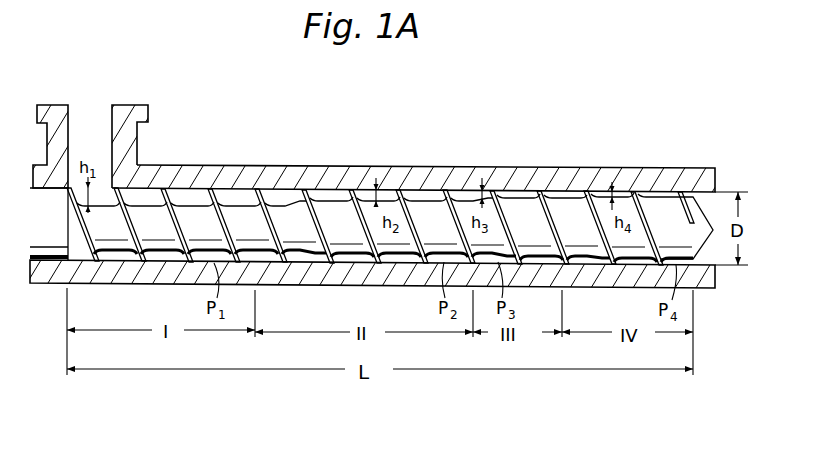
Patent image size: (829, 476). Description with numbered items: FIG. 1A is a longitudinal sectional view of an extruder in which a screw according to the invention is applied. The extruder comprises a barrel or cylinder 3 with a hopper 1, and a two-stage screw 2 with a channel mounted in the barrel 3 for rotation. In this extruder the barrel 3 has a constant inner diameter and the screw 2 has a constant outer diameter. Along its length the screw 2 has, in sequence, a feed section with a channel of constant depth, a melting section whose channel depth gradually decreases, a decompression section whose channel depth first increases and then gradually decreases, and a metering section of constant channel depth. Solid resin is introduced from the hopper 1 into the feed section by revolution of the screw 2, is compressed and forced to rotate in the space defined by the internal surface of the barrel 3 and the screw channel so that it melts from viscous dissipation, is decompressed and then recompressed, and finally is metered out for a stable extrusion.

The hopper 1 is at (90, 108).
The two-stage screw 2 is at (238, 203).
The barrel 3 is at (282, 167).